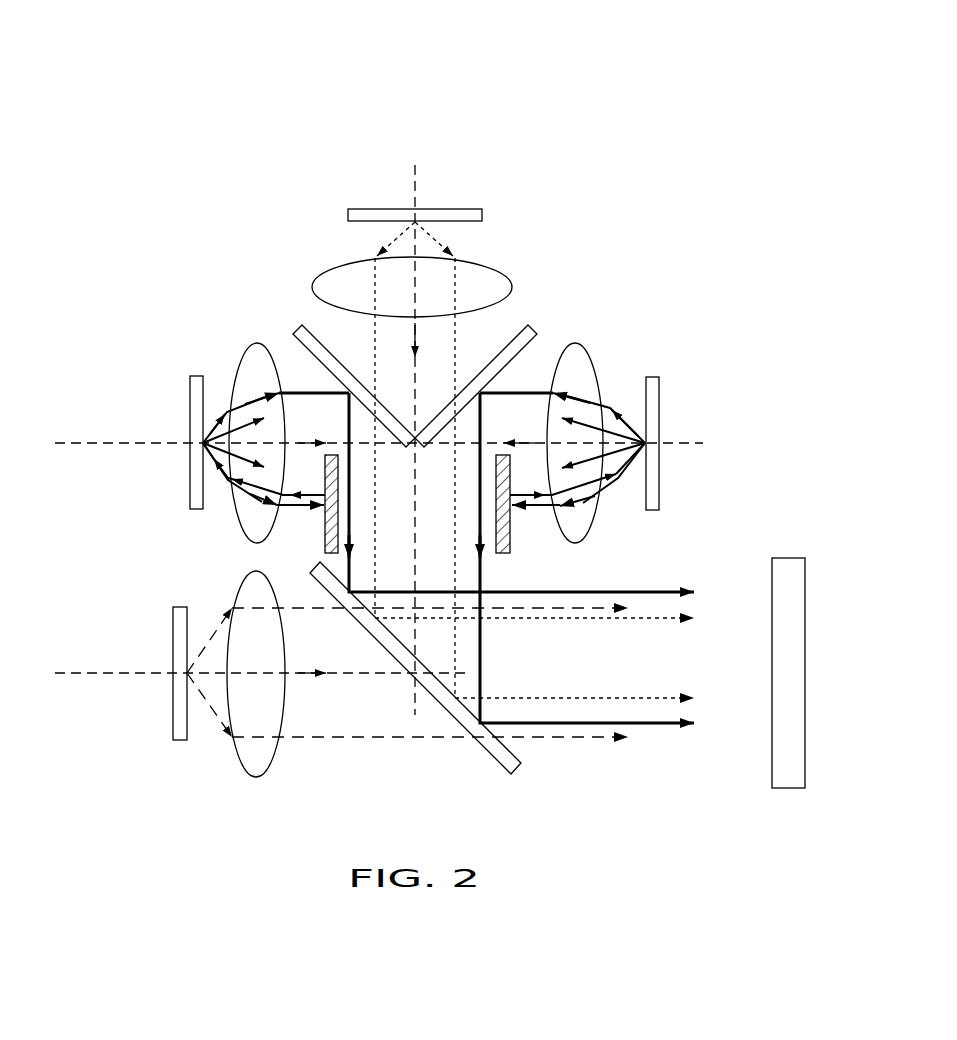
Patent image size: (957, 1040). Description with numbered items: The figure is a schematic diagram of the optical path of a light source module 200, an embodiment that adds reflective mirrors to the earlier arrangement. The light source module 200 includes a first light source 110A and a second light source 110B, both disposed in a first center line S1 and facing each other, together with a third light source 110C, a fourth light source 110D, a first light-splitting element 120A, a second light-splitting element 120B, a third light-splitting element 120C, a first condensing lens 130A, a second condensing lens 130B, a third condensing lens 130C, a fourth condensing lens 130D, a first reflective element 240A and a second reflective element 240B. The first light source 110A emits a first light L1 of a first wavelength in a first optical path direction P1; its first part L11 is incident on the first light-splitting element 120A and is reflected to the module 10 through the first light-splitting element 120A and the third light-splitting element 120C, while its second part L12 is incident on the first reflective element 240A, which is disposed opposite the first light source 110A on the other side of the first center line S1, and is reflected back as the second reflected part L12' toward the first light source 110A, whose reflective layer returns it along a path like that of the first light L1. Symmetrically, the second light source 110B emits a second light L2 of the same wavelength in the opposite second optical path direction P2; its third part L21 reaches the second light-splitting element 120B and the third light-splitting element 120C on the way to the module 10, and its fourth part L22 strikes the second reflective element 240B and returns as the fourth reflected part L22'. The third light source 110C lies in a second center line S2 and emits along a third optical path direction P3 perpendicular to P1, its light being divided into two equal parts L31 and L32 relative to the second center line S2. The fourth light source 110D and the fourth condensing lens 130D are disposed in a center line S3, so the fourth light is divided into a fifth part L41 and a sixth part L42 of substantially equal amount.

The light source module 200 is at (237, 93).
The module 10 is at (792, 788).
The first light source 110A is at (190, 487).
The second light source 110B is at (659, 487).
The third light source 110C is at (370, 209).
The fourth light source 110D is at (173, 712).
The first light-splitting element 120A is at (300, 328).
The second light-splitting element 120B is at (530, 330).
The third light-splitting element 120C is at (515, 770).
The first condensing lens 130A is at (257, 343).
The second condensing lens 130B is at (575, 343).
The third condensing lens 130C is at (345, 262).
The fourth condensing lens 130D is at (256, 777).
The first reflective element 240A is at (327, 553).
The second reflective element 240B is at (503, 553).
The first light L1 is at (107, 327).
The second light L2 is at (743, 320).
The first part of the first light L11 is at (257, 398).
The second part of the first light L12 is at (213, 440).
The second reflected part L12' is at (218, 495).
The third part of the second light L21 is at (580, 398).
The fourth part of the second light L22 is at (629, 437).
The fourth reflected part L22' is at (592, 507).
The part of the third light L31 is at (428, 242).
The part of the third light L32 is at (395, 240).
The fifth part L41 is at (213, 637).
The sixth part L42 is at (213, 713).
The first center line S1 is at (360, 442).
The second center line S2 is at (414, 425).
The center line S3 is at (246, 675).
The first optical path direction P1 is at (311, 541).
The second optical path direction P2 is at (520, 426).
The third optical path direction P3 is at (433, 340).